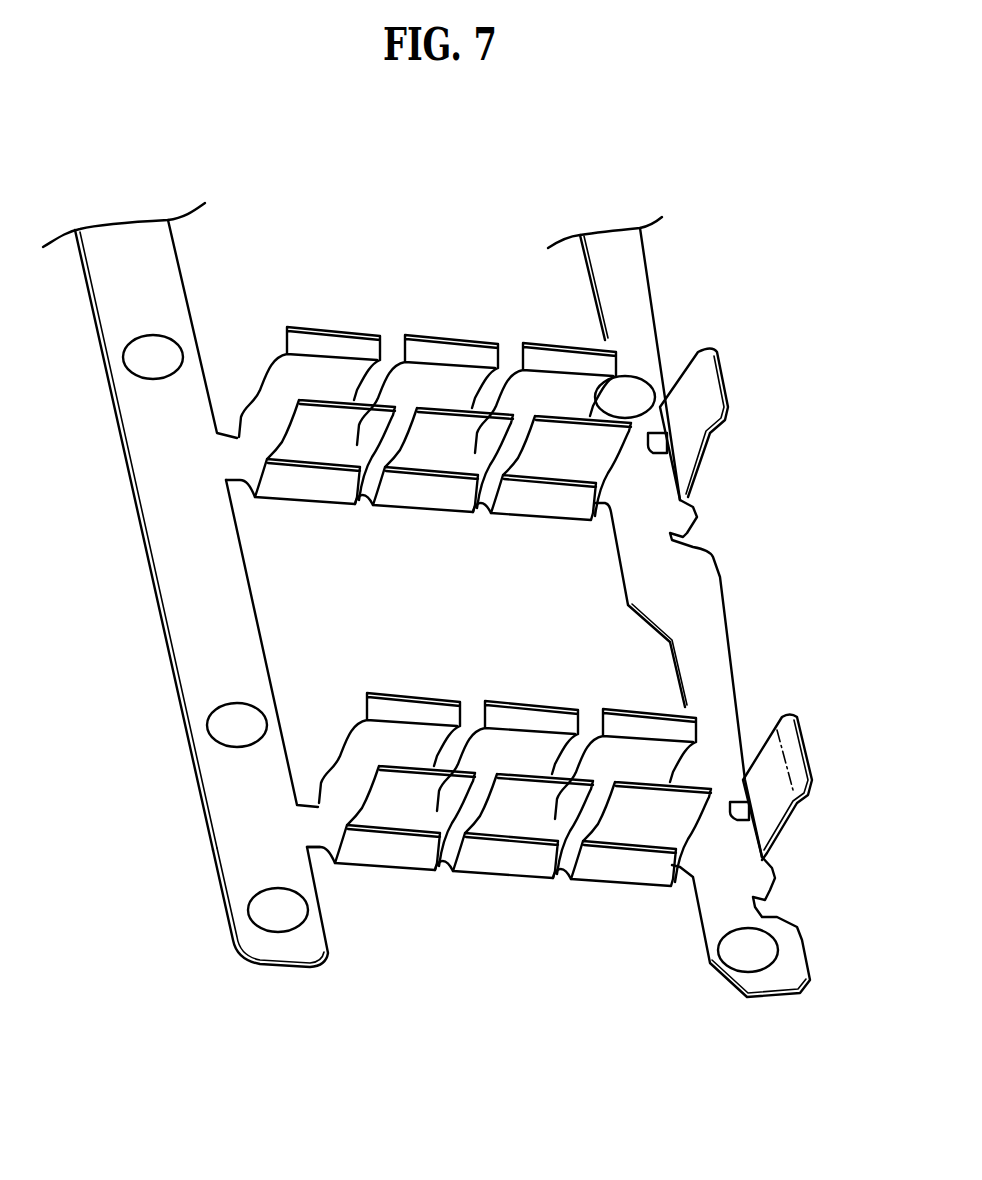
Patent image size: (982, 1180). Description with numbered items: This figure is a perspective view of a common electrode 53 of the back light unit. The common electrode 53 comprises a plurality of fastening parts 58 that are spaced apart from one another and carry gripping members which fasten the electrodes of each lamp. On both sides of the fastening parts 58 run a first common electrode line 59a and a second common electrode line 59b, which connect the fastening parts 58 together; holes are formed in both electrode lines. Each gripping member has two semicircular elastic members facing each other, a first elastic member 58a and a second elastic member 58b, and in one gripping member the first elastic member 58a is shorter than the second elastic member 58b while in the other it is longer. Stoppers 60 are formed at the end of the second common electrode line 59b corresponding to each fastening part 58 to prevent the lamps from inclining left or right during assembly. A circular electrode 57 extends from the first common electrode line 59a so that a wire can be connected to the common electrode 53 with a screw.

The common electrode 53 is at (702, 291).
The circular electrode 57 is at (322, 940).
The fastening part 58 is at (481, 888).
The first elastic member 58a is at (532, 707).
The second elastic member 58b is at (538, 783).
The first common electrode line 59a is at (187, 592).
The second common electrode line 59b is at (723, 632).
The stopper 60 is at (793, 753).